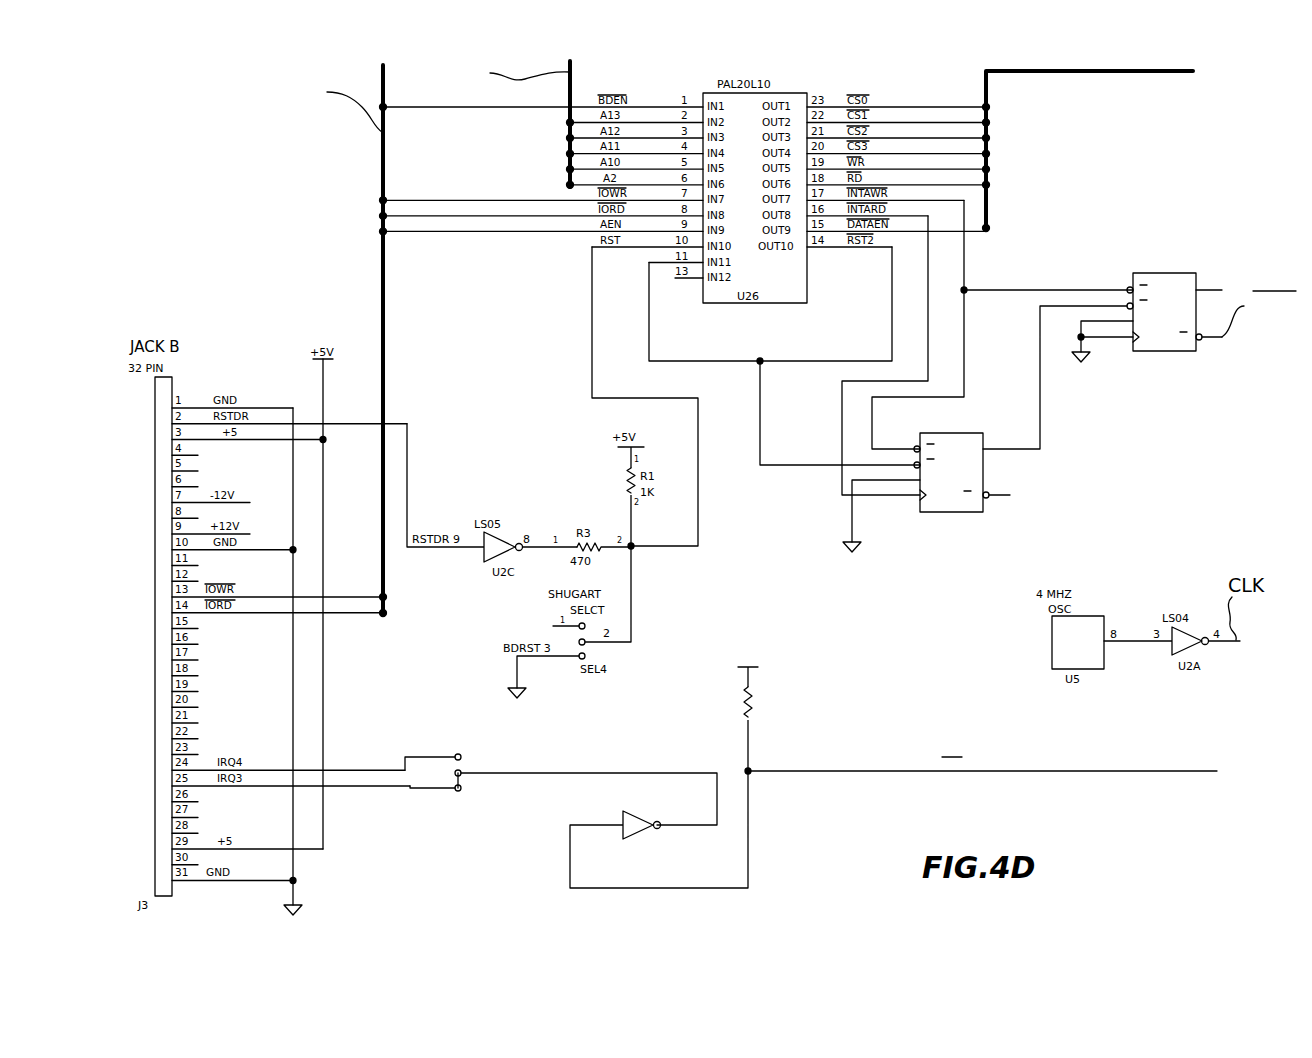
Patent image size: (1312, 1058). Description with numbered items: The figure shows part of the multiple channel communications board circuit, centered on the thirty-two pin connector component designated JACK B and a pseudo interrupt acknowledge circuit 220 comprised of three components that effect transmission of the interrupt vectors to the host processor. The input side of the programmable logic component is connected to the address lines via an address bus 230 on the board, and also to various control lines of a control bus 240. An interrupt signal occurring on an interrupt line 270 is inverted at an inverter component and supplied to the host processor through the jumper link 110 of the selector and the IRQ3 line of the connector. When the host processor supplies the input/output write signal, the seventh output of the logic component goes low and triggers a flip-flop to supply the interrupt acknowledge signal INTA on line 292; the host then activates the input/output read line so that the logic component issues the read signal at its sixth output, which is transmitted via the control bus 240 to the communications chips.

The jumper link 110 is at (463, 786).
The pseudo interrupt acknowledge circuit 220 is at (998, 265).
The address bus 230 is at (570, 165).
The control bus 240 is at (384, 297).
The interrupt line 270 is at (1100, 771).
The interrupt acknowledge line 292 is at (1226, 337).